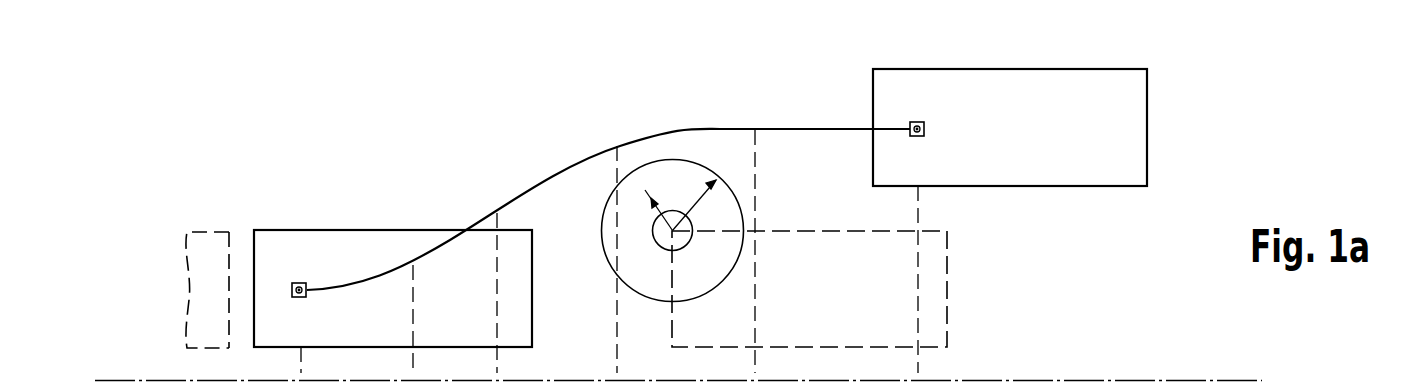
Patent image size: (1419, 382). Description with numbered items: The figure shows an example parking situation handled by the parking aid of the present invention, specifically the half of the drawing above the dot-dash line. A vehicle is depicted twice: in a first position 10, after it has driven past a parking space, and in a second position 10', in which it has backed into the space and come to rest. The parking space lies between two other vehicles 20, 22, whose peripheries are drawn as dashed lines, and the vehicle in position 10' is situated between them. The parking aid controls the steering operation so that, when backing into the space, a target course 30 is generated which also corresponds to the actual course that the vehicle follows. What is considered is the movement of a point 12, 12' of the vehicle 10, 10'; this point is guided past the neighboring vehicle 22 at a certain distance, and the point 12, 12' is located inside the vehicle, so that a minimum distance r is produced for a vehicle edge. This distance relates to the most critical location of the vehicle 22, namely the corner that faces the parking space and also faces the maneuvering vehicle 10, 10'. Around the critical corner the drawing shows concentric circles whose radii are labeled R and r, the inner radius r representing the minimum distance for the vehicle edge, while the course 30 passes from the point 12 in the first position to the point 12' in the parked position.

The vehicle in first position 10 is at (1066, 127).
The vehicle in second position 10' is at (393, 231).
The point of the vehicle 12 is at (911, 79).
The point of the vehicle 12' is at (286, 236).
The vehicle 20 is at (212, 243).
The vehicle 22 is at (938, 273).
The target course 30 is at (657, 132).
The outer radius R is at (690, 200).
The minimum distance r is at (658, 225).